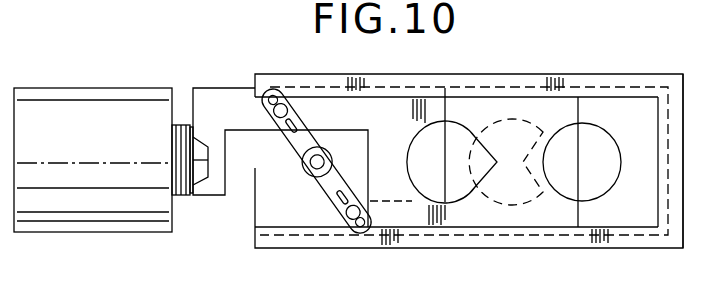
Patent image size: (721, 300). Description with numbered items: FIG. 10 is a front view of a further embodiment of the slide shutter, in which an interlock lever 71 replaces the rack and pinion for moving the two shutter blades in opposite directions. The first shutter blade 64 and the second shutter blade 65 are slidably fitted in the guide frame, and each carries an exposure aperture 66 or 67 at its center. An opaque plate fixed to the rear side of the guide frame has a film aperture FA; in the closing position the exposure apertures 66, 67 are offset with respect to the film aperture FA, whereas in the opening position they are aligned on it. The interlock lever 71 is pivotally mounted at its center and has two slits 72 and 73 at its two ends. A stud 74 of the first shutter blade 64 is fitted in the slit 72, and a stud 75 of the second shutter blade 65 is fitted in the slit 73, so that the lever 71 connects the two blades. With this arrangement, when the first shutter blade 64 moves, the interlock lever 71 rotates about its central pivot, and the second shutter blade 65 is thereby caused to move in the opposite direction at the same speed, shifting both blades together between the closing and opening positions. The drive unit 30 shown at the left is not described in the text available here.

The motor 30 is at (103, 84).
The first shutter blade 64 is at (488, 213).
The second shutter blade 65 is at (632, 208).
The exposure aperture 66 is at (435, 126).
The exposure aperture 67 is at (592, 128).
The film aperture FA is at (517, 121).
The interlock lever 71 is at (296, 144).
The slit 72 is at (284, 139).
The slit 73 is at (333, 202).
The stud 74 is at (281, 99).
The stud 75 is at (350, 226).